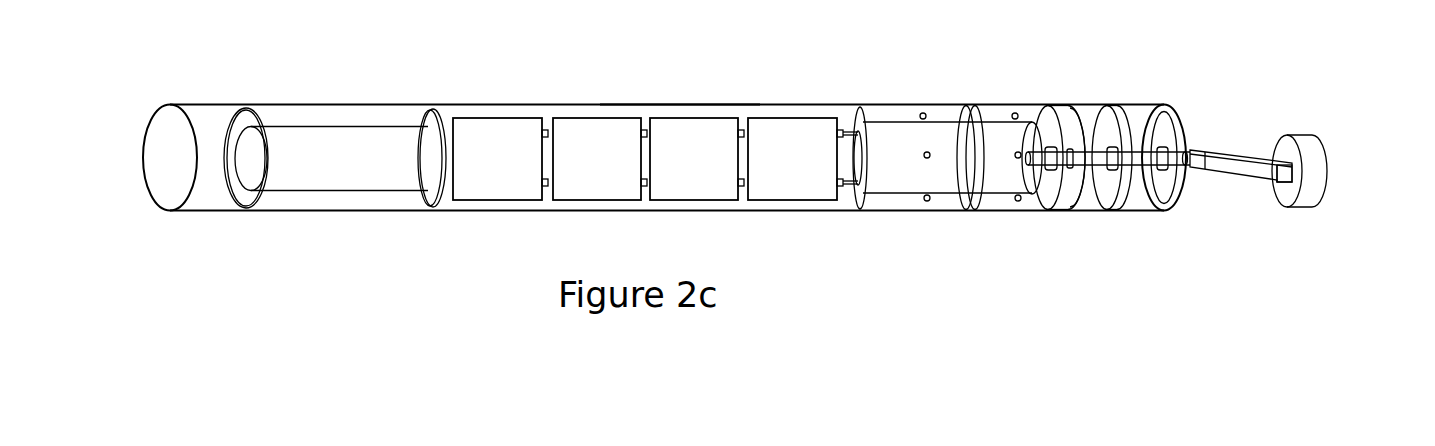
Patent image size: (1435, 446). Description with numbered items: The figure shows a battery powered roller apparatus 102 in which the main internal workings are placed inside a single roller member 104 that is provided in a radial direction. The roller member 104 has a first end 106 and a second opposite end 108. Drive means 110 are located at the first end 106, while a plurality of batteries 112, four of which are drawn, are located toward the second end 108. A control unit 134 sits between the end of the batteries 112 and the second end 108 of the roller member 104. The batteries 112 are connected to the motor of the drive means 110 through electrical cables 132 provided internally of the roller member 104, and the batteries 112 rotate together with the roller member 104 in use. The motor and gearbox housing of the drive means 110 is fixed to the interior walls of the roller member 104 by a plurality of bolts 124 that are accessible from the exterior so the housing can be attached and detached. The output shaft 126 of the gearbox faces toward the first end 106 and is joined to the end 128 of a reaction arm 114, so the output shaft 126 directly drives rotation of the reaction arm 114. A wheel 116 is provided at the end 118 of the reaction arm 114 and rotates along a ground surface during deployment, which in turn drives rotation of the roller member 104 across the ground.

The roller apparatus 102 is at (495, 228).
The roller member 104 is at (483, 105).
The first end 106 is at (1200, 100).
The second end 108 is at (157, 228).
The drive means 110 is at (981, 228).
The batteries 112 is at (680, 98).
The reaction arm 114 is at (1242, 166).
The wheel 116 is at (1323, 163).
The end of reaction arm 118 is at (1289, 187).
The bolts 124 is at (1014, 114).
The output shaft 126 is at (1092, 158).
The end of reaction arm 128 is at (1209, 134).
The electrical cables 132 is at (849, 128).
The control unit 134 is at (333, 165).